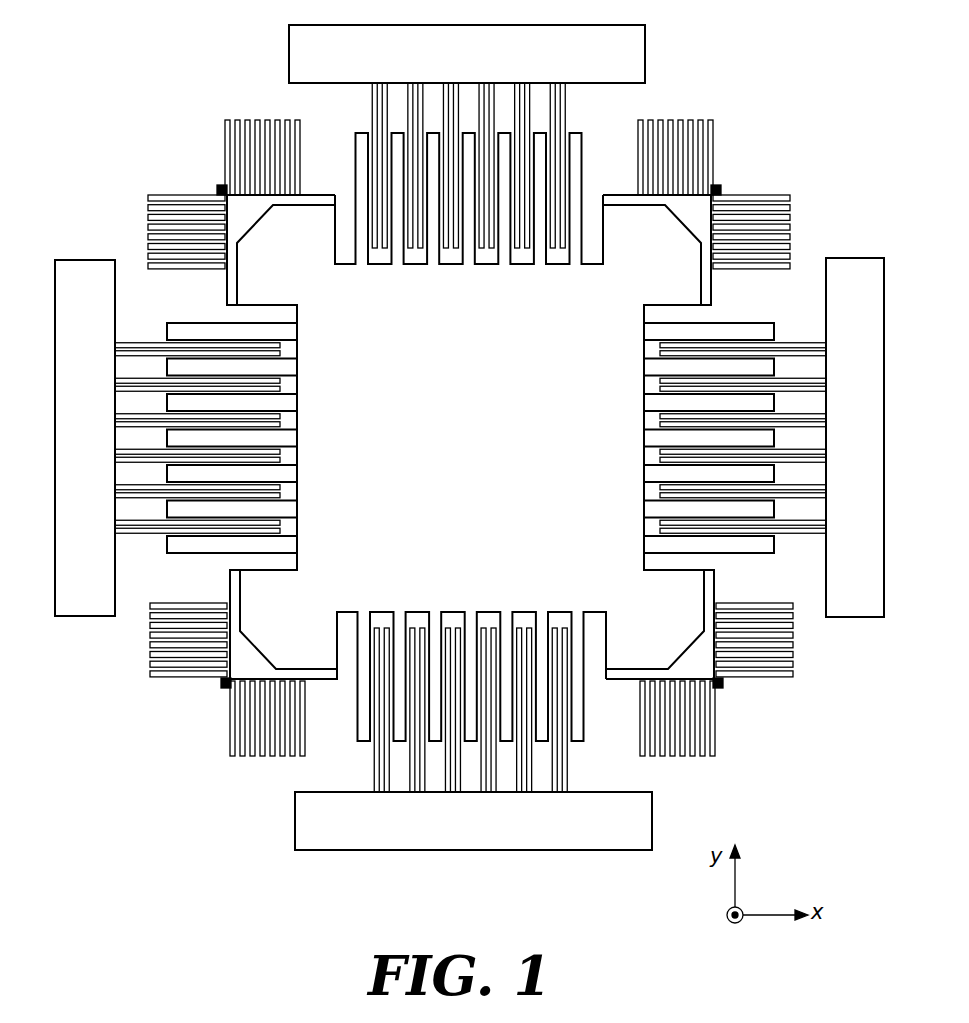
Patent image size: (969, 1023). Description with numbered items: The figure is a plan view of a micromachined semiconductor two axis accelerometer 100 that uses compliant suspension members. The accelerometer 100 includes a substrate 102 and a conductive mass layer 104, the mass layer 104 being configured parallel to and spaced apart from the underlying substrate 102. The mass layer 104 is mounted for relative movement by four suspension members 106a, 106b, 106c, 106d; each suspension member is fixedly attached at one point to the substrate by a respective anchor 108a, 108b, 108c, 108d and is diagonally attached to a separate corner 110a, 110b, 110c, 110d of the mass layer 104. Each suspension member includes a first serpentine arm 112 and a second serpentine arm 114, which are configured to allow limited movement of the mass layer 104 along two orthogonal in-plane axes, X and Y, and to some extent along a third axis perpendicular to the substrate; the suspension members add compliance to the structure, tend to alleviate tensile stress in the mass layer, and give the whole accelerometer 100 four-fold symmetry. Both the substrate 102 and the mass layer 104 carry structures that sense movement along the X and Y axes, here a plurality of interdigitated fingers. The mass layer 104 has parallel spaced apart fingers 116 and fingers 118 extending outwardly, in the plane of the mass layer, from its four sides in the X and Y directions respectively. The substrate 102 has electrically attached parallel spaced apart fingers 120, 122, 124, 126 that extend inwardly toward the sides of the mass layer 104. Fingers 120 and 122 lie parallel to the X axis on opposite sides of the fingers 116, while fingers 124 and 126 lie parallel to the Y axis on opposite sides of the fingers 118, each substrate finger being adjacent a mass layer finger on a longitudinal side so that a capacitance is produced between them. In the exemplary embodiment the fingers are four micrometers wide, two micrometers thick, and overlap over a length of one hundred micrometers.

The two axis accelerometer 100 is at (230, 80).
The substrate 102 is at (360, 116).
The conductive mass layer 104 is at (493, 457).
The suspension member 106a is at (140, 187).
The suspension member 106b is at (712, 112).
The suspension member 106c is at (191, 705).
The suspension member 106d is at (718, 768).
The anchor 108a is at (218, 187).
The anchor 108b is at (720, 187).
The anchor 108c is at (223, 688).
The anchor 108d is at (720, 686).
The corner of the mass layer 110a is at (310, 257).
The corner of the mass layer 110b is at (672, 257).
The corner of the mass layer 110c is at (312, 630).
The corner of the mass layer 110d is at (682, 630).
The first serpentine arm 112 is at (150, 657).
The second serpentine arm 114 is at (262, 757).
The fingers of the mass layer parallel to the X axis 116 is at (183, 330).
The fingers of the mass layer parallel to the Y axis 118 is at (503, 137).
The substrate finger 120 is at (145, 534).
The substrate finger 122 is at (147, 345).
The substrate finger 124 is at (372, 92).
The substrate finger 126 is at (385, 108).